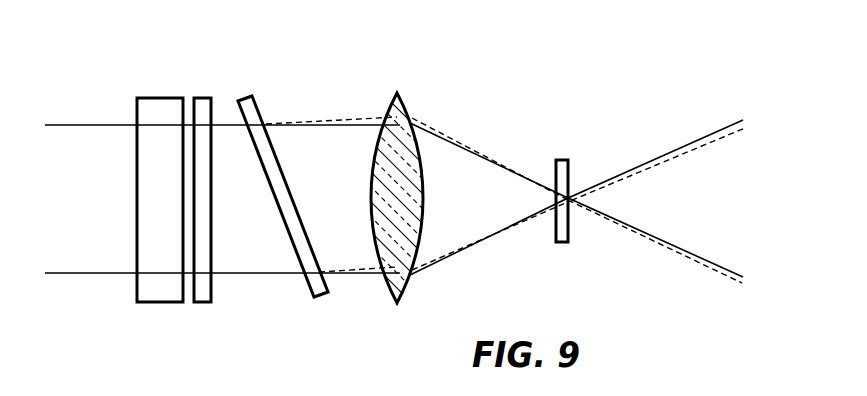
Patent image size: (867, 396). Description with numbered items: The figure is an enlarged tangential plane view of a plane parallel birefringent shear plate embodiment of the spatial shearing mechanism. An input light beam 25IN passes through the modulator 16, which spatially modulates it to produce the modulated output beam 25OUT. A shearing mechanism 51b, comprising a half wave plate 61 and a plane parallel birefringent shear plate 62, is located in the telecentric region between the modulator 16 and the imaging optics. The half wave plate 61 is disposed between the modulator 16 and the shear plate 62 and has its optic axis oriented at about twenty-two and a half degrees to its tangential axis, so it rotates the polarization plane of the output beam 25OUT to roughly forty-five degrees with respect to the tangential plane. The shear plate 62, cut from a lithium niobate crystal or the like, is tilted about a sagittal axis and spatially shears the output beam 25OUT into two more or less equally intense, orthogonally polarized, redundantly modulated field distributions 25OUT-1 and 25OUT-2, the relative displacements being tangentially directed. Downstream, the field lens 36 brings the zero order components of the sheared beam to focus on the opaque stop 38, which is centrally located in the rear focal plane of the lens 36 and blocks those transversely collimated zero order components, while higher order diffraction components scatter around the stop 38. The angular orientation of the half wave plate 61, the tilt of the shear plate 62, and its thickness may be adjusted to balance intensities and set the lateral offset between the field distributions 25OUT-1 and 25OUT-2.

The modulator 16 is at (155, 302).
The input light beam 25IN is at (97, 172).
The modulated output beam 25OUT is at (184, 247).
The shearing mechanism 51b is at (281, 192).
The half wave plate 61 is at (208, 287).
The plane parallel birefringent shear plate 62 is at (320, 296).
The field lens 36 is at (412, 113).
The opaque stop 38 is at (557, 158).
The first sheared field distribution 25OUT-1 is at (659, 165).
The second sheared field distribution 25OUT-2 is at (733, 140).